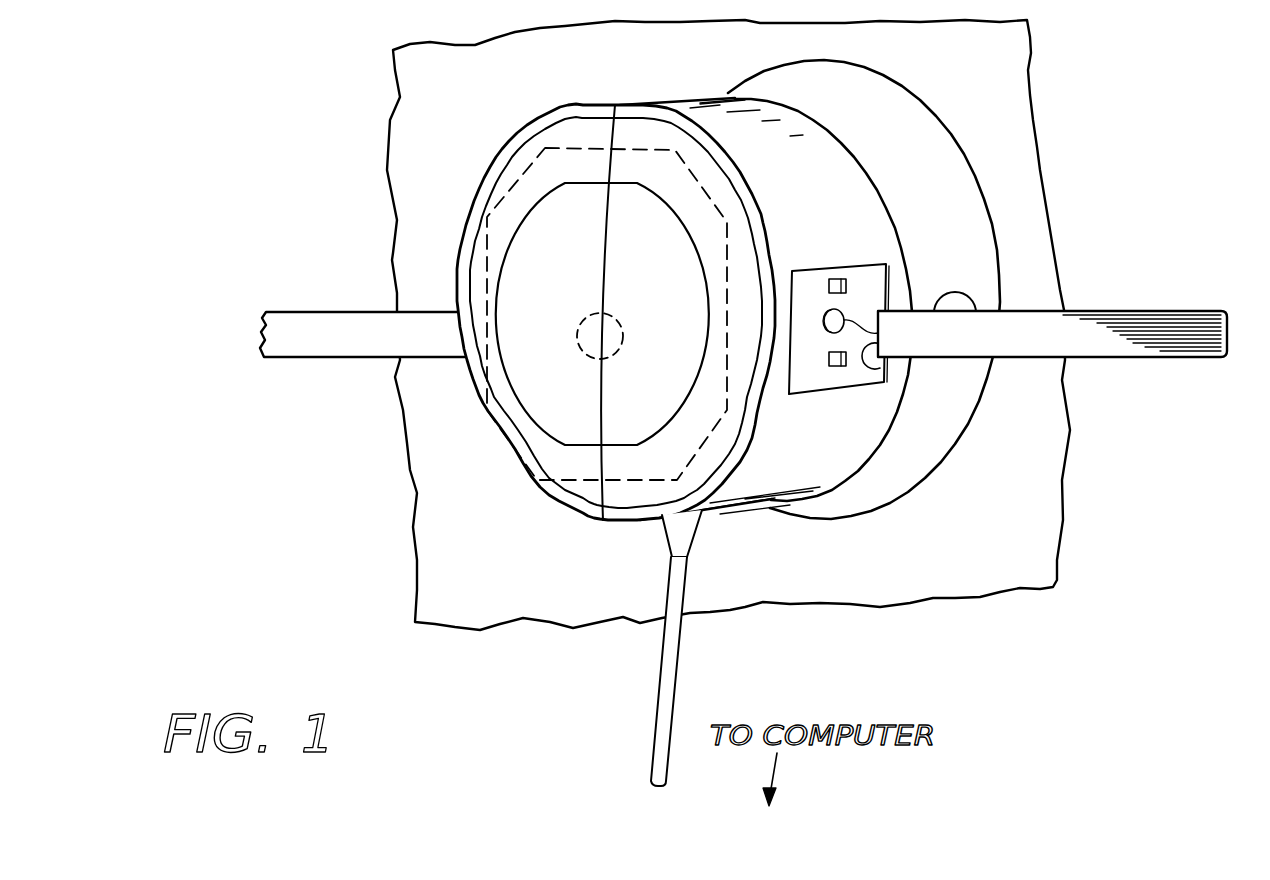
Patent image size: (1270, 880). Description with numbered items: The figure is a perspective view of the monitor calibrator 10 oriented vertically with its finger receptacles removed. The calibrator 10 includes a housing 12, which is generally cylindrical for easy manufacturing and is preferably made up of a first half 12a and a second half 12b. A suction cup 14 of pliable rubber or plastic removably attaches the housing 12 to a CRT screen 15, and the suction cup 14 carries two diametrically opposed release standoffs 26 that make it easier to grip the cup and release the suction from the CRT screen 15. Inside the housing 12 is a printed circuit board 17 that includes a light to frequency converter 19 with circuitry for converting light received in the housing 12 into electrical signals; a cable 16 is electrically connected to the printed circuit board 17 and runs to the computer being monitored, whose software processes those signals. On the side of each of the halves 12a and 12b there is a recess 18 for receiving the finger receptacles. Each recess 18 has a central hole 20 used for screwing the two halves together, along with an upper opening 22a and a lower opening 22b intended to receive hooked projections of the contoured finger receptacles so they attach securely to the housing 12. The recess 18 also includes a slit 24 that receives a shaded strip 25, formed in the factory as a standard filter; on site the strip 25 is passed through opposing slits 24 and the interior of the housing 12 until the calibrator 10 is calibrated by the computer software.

The monitor calibrator 10 is at (483, 163).
The housing 12 is at (588, 514).
The first half of the housing 12a is at (584, 134).
The second half of the housing 12b is at (700, 114).
The suction cup 14 is at (897, 115).
The CRT screen 15 is at (1046, 146).
The cable 16 is at (688, 666).
The printed circuit board 17 is at (506, 432).
The recess 18 is at (806, 284).
The light to frequency converter 19 is at (588, 318).
The central hole 20 is at (878, 335).
The upper opening 22a is at (863, 243).
The lower opening 22b is at (837, 370).
The slit 24 is at (891, 368).
The shaded strip 25 is at (1108, 310).
The release standoffs 26 is at (977, 250).